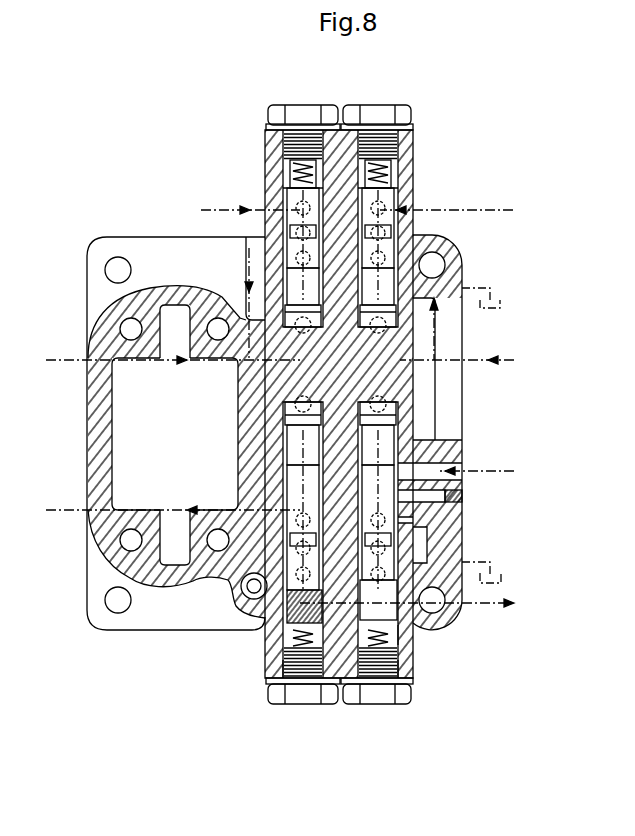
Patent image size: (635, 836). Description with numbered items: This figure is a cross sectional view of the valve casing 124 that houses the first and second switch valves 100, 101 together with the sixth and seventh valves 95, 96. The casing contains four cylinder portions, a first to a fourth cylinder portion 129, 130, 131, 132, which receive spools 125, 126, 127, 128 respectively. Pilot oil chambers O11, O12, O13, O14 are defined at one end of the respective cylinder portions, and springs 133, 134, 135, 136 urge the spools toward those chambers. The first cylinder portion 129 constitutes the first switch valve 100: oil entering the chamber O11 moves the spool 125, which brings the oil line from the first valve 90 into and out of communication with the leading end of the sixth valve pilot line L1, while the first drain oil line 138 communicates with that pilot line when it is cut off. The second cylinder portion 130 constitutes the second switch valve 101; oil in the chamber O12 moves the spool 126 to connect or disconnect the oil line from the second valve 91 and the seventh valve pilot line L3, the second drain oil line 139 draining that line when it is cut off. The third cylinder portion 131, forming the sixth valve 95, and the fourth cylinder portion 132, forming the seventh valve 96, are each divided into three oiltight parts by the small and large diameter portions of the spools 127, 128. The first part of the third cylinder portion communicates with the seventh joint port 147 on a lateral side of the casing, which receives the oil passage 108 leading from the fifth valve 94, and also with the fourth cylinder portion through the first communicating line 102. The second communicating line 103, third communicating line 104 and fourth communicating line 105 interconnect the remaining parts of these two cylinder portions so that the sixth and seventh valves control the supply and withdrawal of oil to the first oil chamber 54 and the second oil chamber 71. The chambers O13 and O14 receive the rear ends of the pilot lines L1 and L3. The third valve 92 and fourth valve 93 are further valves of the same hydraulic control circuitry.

The first switch valve 100 is at (425, 138).
The second switch valve 101 is at (260, 134).
The first communicating line 102 is at (347, 470).
The second communicating line 103 is at (238, 493).
The third communicating line 104 is at (427, 548).
The fourth communicating line 105 is at (316, 645).
The oil passage 108 is at (530, 482).
The valve casing 124 is at (462, 408).
The spool 125 is at (398, 188).
The spool 126 is at (290, 202).
The spool 127 is at (430, 618).
The spool 128 is at (288, 450).
The first cylinder portion 129 is at (414, 130).
The second cylinder portion 130 is at (266, 130).
The third cylinder portion 131 is at (420, 682).
The fourth cylinder portion 132 is at (268, 682).
The spring 133 is at (396, 168).
The spring 134 is at (296, 166).
The spring 135 is at (405, 635).
The spring 136 is at (285, 632).
The first drain oil line 138 is at (398, 232).
The second drain oil line 139 is at (312, 218).
The seventh joint port 147 is at (460, 463).
The first valve 90 is at (464, 210).
The second valve 91 is at (232, 210).
The third valve 92 is at (475, 360).
The fourth valve 93 is at (155, 360).
The fifth valve 94 is at (495, 470).
The first oil chamber 54 is at (155, 510).
The second oil chamber 71 is at (425, 603).
The sixth valve 95 is at (416, 670).
The seventh valve 96 is at (262, 675).
The sixth valve pilot line L1 is at (434, 342).
The seventh valve pilot line L3 is at (249, 250).
The pilot oil chamber O11 is at (372, 328).
The pilot oil chamber O12 is at (295, 330).
The pilot oil chamber O13 is at (380, 402).
The pilot oil chamber O14 is at (303, 403).